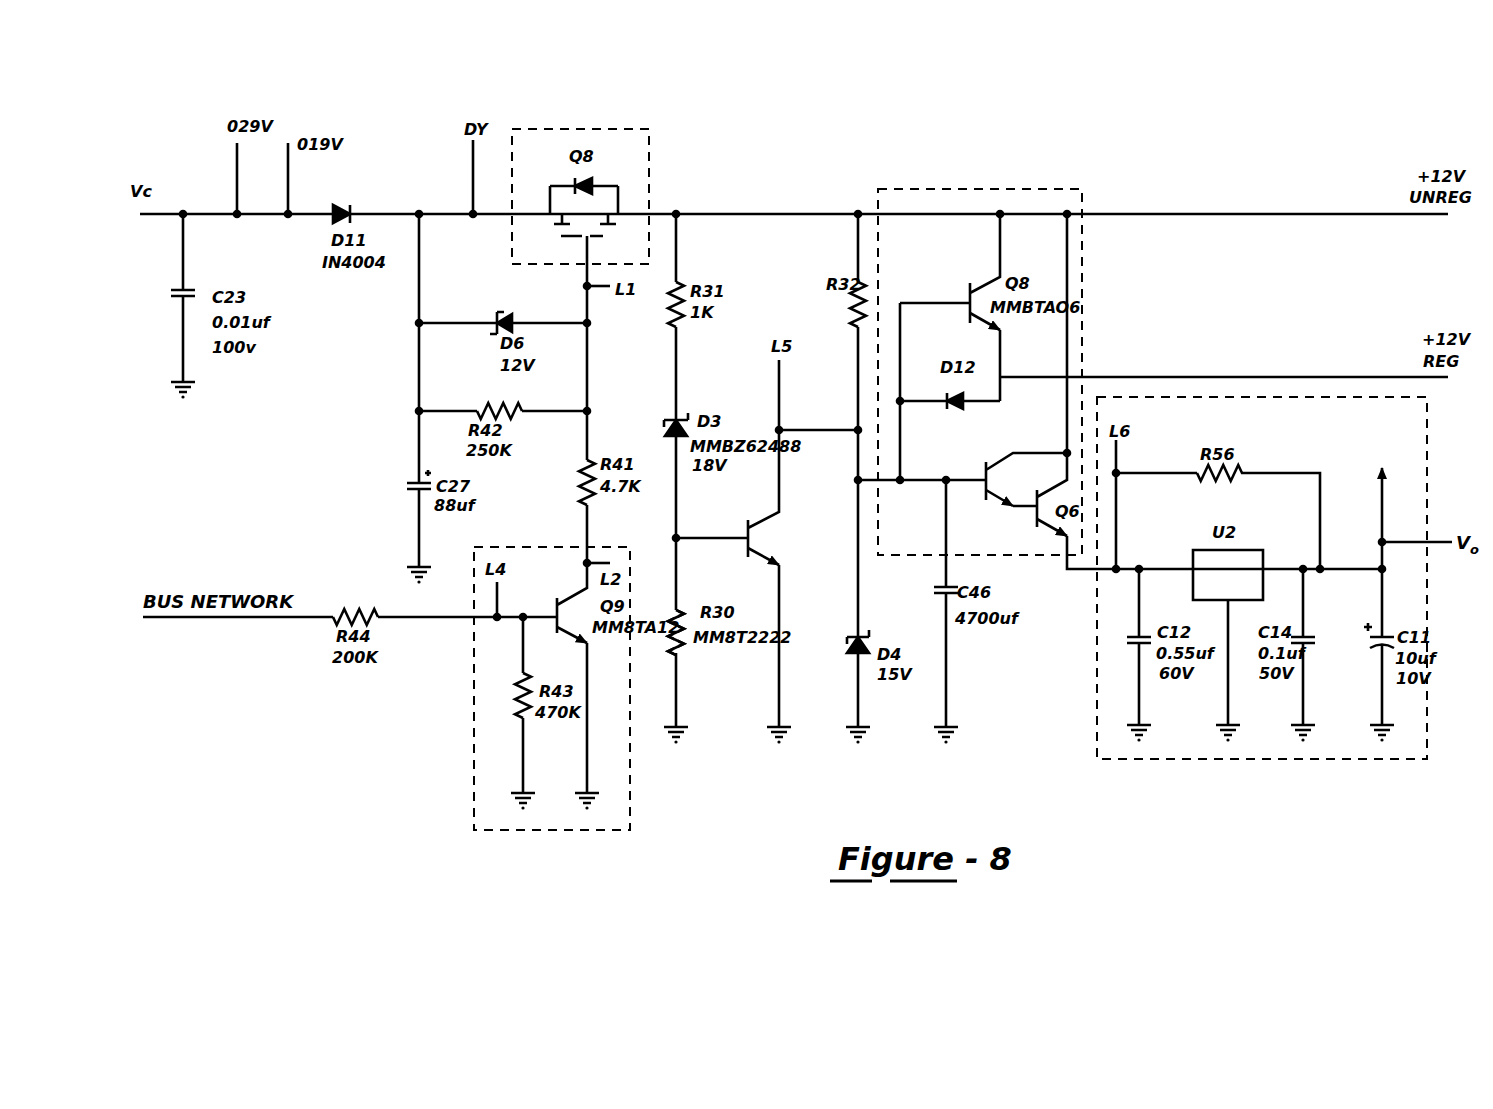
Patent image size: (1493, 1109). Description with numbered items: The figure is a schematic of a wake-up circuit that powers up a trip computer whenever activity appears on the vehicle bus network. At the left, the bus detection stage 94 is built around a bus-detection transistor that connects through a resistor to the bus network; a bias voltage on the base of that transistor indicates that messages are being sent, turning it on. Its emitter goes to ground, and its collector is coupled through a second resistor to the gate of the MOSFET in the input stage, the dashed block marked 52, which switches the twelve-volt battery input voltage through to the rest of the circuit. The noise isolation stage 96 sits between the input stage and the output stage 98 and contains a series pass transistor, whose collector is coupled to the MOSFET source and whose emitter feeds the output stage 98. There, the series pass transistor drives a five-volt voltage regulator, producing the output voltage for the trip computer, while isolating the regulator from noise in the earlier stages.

The switching transistor circuit 52 is at (587, 129).
The bus detection stage 94 is at (582, 830).
The noise isolation stage 96 is at (957, 189).
The signal output stage 98 is at (1170, 759).